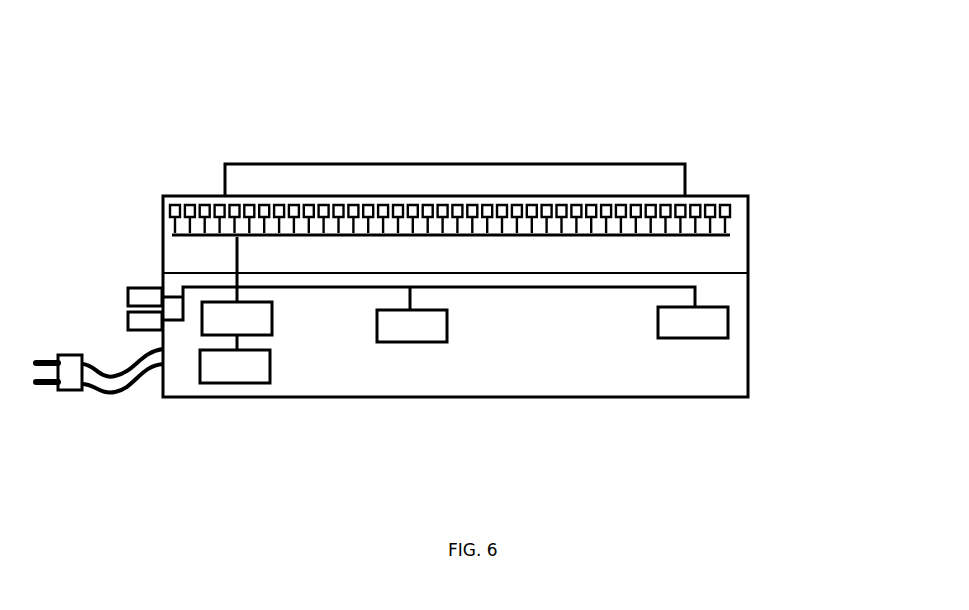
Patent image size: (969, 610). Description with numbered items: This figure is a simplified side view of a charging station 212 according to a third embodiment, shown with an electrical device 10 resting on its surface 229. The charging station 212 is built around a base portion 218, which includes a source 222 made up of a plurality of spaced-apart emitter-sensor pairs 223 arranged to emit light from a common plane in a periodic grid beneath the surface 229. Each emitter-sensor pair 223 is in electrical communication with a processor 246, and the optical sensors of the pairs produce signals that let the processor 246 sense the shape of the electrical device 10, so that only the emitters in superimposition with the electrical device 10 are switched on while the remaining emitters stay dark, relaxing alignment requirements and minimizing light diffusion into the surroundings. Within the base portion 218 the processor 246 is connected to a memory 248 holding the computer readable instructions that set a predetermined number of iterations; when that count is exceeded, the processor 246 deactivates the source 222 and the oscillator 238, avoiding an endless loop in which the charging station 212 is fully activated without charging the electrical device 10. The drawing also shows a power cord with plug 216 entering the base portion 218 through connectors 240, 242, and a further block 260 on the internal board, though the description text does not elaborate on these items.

The electrical device 10 is at (627, 163).
The charging station 212 is at (443, 101).
The power cord with plug 216 is at (68, 423).
The base portion 218 is at (780, 197).
The source 222 is at (160, 212).
The emitter-sensor pairs 223 is at (185, 204).
The surface 229 is at (266, 181).
The oscillator 238 is at (658, 310).
The connector 240 is at (128, 290).
The connector 242 is at (128, 315).
The processor 246 is at (237, 318).
The memory 248 is at (235, 366).
The sensor 260 is at (377, 312).